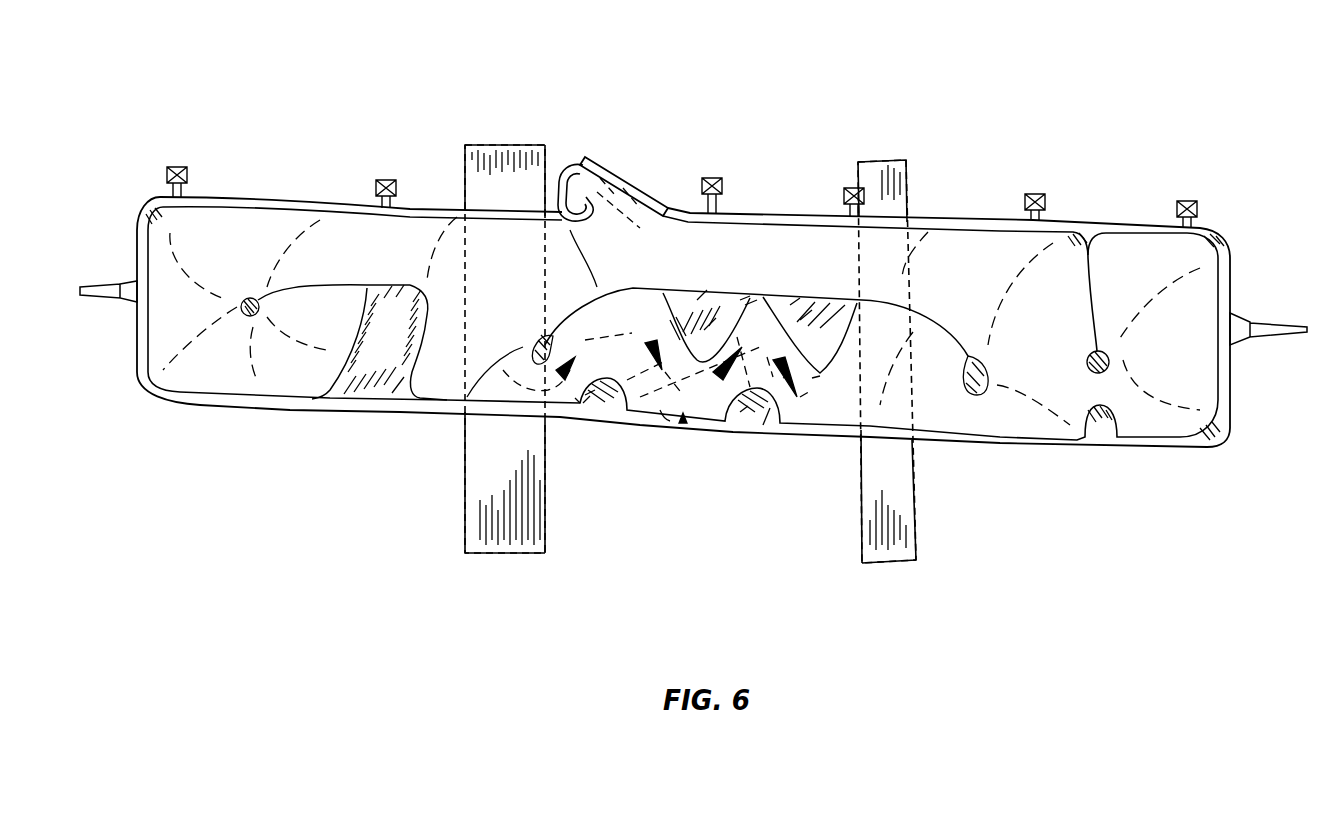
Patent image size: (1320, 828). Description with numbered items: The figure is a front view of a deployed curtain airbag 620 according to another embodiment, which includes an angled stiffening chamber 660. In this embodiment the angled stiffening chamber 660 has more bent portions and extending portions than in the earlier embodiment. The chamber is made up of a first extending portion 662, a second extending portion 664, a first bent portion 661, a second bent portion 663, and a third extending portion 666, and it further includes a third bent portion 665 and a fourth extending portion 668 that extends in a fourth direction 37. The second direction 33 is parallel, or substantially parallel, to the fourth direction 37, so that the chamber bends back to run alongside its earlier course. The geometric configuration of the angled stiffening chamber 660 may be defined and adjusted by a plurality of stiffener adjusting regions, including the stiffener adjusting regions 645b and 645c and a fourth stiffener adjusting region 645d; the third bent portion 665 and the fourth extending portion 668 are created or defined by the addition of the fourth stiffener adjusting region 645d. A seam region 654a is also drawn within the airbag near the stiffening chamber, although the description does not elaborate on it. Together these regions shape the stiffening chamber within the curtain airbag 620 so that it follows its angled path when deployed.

The curtain airbag 620 is at (1064, 178).
The first bent portion 661 is at (561, 178).
The second extending portion 664 is at (624, 180).
The seam 654a is at (702, 305).
The second direction 33 is at (681, 336).
The third bent portion 665 is at (750, 297).
The fourth stiffener adjusting region 645d is at (797, 317).
The first extending portion 662 is at (580, 403).
The stiffener adjusting region 645b is at (593, 410).
The second bent portion 663 is at (660, 410).
The angled stiffening chamber 660 is at (683, 421).
The third extending portion 666 is at (739, 413).
The fourth direction 37 is at (785, 380).
The stiffener adjusting region 645c is at (763, 425).
The fourth extending portion 668 is at (812, 378).